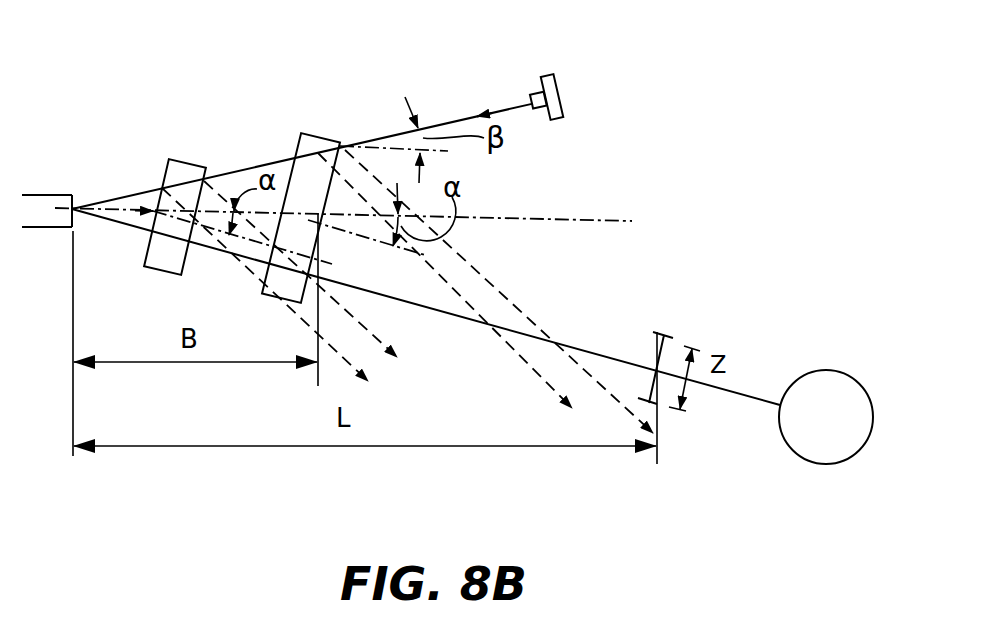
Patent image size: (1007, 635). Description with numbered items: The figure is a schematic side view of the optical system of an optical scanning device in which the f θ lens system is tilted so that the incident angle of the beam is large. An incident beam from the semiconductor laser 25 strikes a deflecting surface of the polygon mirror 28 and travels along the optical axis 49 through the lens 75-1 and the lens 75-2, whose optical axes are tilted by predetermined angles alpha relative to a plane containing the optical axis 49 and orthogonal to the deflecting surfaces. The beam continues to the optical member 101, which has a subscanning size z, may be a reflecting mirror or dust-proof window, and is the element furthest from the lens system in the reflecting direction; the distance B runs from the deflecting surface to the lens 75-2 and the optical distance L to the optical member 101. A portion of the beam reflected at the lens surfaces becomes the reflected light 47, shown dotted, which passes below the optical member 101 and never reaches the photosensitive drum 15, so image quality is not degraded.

The polygon mirror 28 is at (47, 195).
The lens 75-1 is at (192, 160).
The lens 75-2 is at (322, 133).
The semiconductor laser 25 is at (565, 90).
The optical axis 49 is at (557, 212).
The reflected light 47 is at (491, 285).
The optical member 101 is at (668, 336).
The photosensitive drum 15 is at (807, 428).